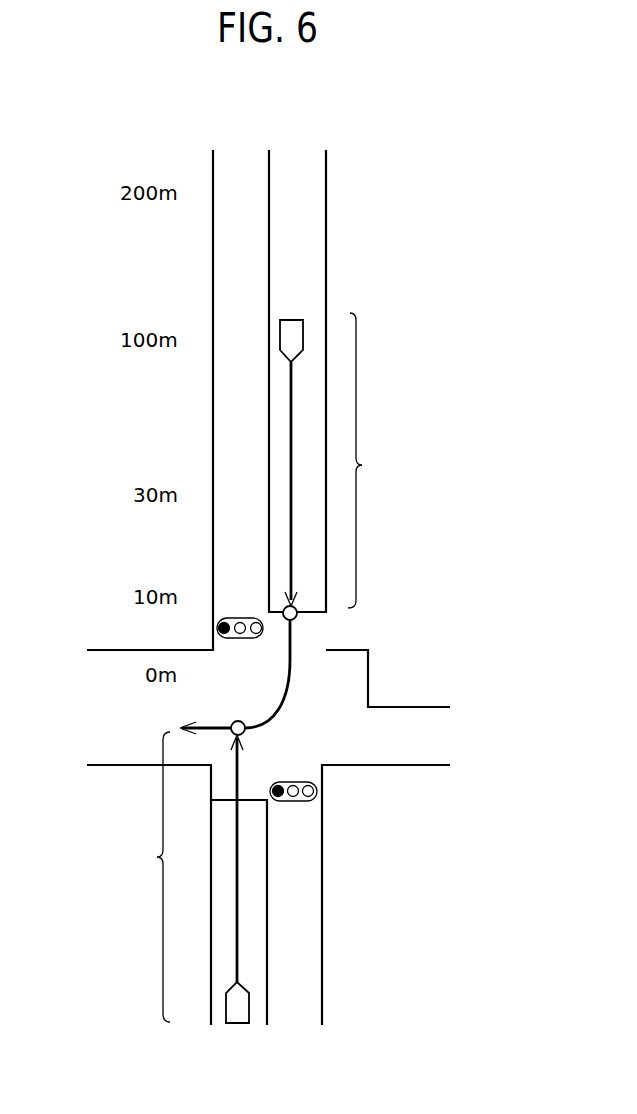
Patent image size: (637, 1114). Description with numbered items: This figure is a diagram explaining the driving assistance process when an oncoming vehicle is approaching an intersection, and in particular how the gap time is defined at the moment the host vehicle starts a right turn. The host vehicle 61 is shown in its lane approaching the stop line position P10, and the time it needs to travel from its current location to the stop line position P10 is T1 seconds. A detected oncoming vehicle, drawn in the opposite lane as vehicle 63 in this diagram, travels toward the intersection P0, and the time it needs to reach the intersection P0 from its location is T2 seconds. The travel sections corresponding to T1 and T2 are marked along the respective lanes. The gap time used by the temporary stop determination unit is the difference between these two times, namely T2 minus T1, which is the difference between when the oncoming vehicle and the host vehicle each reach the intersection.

The host vehicle 61 is at (300, 322).
The host vehicle 63 is at (236, 1024).
The intersection P0 is at (238, 720).
The stop line position P10 is at (293, 620).
The time for host vehicle to reach stop line position T1 is at (373, 460).
The time for oncoming vehicle to reach intersection T2 is at (148, 877).